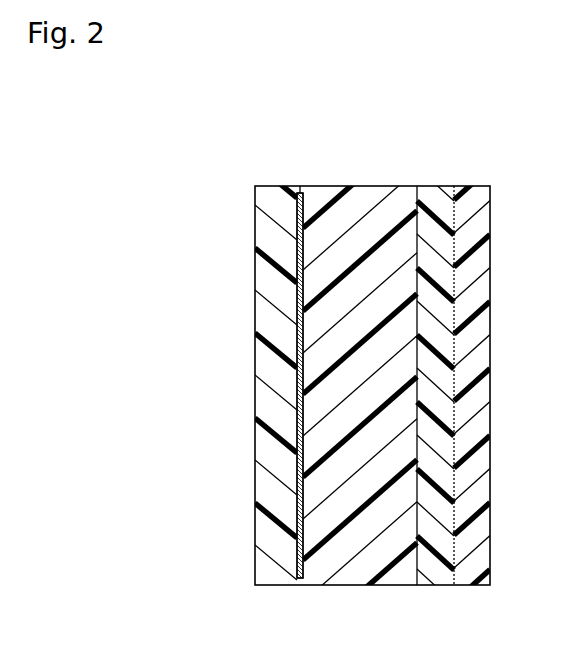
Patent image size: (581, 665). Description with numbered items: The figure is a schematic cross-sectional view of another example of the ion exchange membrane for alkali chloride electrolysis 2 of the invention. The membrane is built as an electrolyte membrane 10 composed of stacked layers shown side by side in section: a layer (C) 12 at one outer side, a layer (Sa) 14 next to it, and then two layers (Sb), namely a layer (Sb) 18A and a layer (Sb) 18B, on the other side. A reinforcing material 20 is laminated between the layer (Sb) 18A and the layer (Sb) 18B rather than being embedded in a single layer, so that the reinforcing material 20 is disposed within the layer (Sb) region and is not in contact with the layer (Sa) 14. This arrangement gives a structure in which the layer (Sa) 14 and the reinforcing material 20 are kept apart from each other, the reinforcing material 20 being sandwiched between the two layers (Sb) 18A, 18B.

The ion exchange membrane for alkali chloride electrolysis 2 is at (372, 156).
The electrolyte membrane 10 is at (494, 210).
The layer (C) 12 is at (470, 586).
The layer (Sa) 14 is at (440, 586).
The layer (Sb) 18A is at (357, 586).
The layer (Sb) 18B is at (278, 586).
The reinforcing material 20 is at (288, 216).